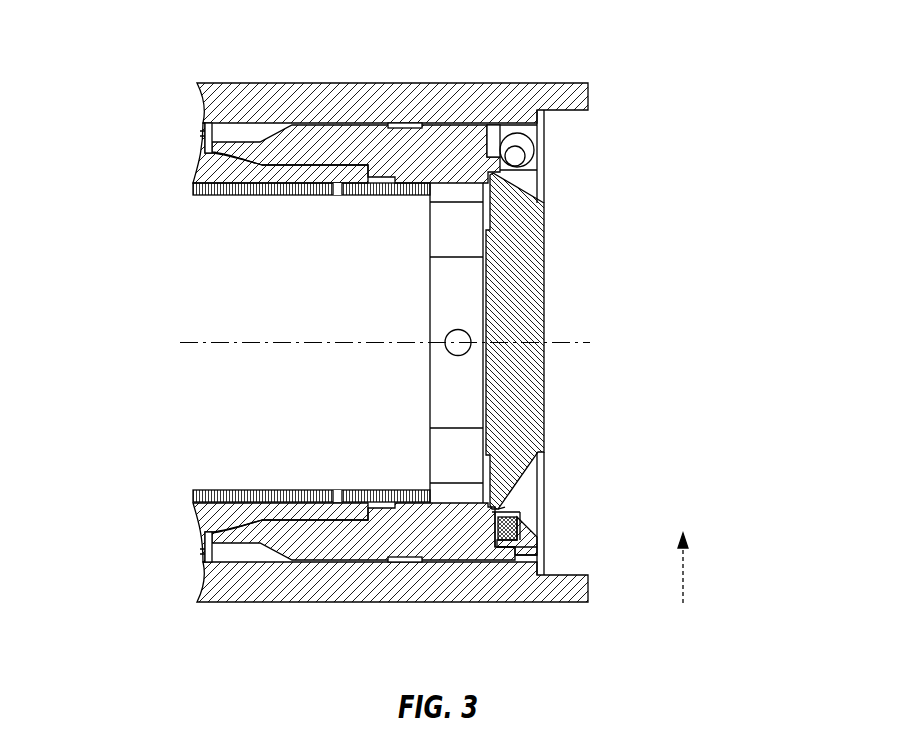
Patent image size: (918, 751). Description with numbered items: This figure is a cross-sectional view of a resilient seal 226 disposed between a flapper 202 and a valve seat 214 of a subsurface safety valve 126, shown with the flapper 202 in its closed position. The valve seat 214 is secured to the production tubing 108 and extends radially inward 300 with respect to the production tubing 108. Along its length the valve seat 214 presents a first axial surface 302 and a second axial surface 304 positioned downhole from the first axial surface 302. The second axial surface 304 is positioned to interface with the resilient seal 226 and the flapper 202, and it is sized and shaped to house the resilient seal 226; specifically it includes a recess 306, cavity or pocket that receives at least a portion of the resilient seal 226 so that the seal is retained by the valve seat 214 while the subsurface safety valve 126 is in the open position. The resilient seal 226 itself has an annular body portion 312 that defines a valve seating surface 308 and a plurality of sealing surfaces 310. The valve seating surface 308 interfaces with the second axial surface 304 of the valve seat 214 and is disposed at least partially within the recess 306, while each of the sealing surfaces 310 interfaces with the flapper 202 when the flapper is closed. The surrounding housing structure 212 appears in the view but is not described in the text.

The production tubing 108 is at (228, 88).
The subsurface safety valve 126 is at (504, 43).
The flapper 202 is at (538, 281).
The housing 212 is at (674, 78).
The valve seat 214 is at (334, 138).
The resilient seal 226 is at (535, 160).
The radially inward direction 300 is at (684, 568).
The first axial surface 302 is at (200, 147).
The second axial surface 304 is at (500, 136).
The recess 306 is at (513, 536).
The valve seating surface 308 is at (491, 531).
The sealing surfaces 310 is at (507, 506).
The annular body portion 312 is at (518, 517).